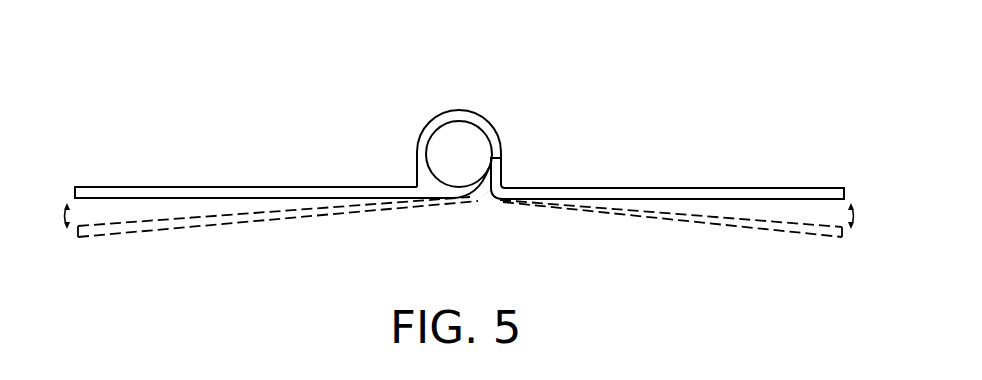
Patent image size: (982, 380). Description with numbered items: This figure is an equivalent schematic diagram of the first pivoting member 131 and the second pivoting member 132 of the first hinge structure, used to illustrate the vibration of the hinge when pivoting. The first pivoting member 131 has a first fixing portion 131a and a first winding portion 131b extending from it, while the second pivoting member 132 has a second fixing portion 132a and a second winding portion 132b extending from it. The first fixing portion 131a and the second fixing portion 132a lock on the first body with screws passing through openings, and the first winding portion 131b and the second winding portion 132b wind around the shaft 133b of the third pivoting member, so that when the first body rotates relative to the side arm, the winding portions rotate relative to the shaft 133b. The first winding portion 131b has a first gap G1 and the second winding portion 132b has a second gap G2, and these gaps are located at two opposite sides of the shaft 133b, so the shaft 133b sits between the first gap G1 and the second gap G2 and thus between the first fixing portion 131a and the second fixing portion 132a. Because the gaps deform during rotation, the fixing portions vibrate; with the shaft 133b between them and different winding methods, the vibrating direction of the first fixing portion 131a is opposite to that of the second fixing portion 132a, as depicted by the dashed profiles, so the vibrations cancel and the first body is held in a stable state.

The first pivoting member 131 is at (383, 68).
The first fixing portion 131a is at (221, 187).
The first winding portion 131b is at (413, 180).
The first gap G1 is at (418, 174).
The second pivoting member 132 is at (683, 75).
The second fixing portion 132a is at (668, 188).
The second winding portion 132b is at (497, 153).
The second gap G2 is at (484, 209).
The shaft 133b is at (463, 140).